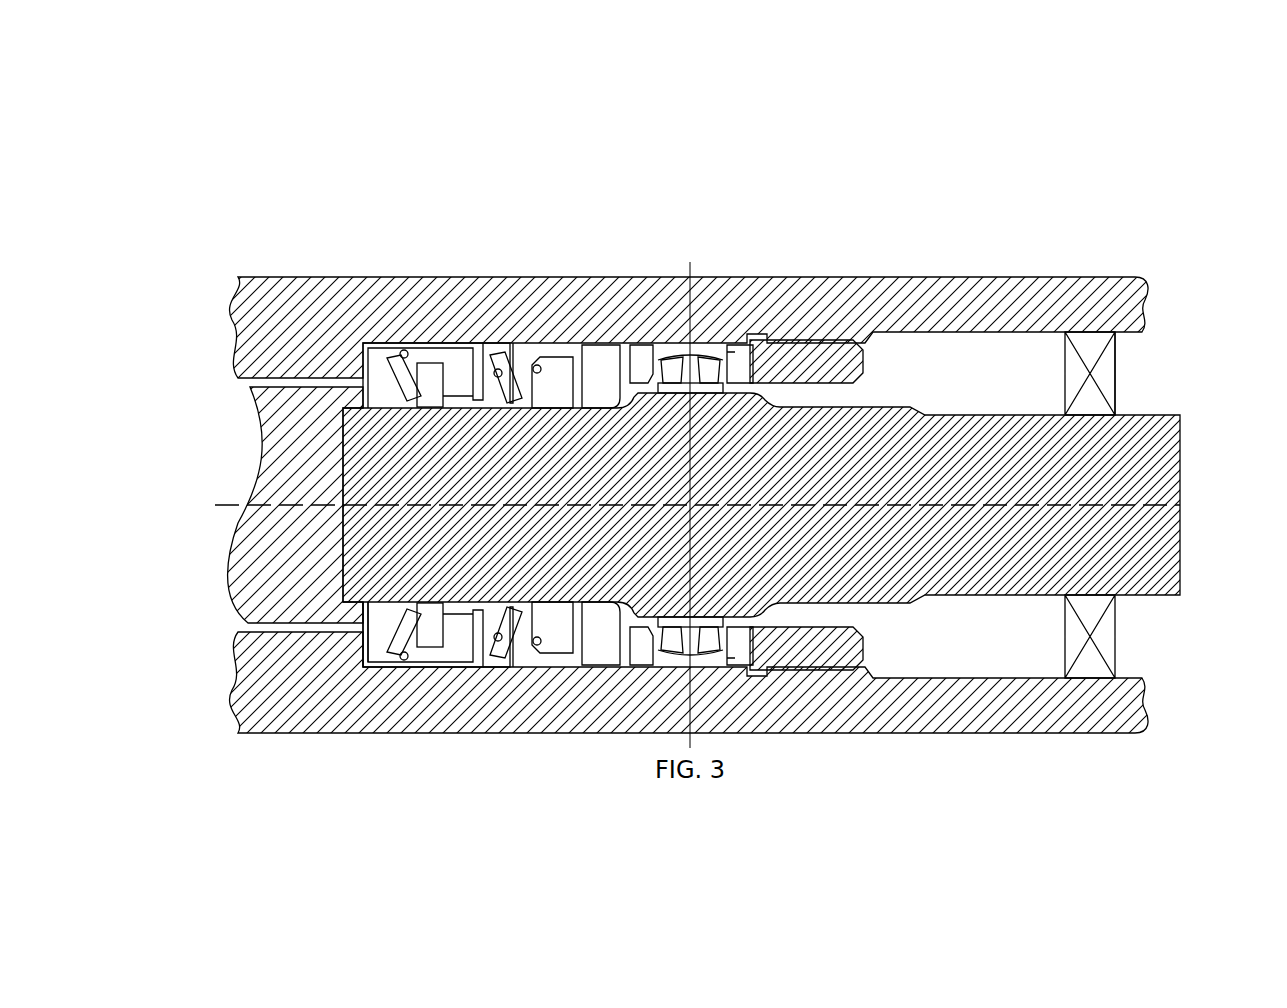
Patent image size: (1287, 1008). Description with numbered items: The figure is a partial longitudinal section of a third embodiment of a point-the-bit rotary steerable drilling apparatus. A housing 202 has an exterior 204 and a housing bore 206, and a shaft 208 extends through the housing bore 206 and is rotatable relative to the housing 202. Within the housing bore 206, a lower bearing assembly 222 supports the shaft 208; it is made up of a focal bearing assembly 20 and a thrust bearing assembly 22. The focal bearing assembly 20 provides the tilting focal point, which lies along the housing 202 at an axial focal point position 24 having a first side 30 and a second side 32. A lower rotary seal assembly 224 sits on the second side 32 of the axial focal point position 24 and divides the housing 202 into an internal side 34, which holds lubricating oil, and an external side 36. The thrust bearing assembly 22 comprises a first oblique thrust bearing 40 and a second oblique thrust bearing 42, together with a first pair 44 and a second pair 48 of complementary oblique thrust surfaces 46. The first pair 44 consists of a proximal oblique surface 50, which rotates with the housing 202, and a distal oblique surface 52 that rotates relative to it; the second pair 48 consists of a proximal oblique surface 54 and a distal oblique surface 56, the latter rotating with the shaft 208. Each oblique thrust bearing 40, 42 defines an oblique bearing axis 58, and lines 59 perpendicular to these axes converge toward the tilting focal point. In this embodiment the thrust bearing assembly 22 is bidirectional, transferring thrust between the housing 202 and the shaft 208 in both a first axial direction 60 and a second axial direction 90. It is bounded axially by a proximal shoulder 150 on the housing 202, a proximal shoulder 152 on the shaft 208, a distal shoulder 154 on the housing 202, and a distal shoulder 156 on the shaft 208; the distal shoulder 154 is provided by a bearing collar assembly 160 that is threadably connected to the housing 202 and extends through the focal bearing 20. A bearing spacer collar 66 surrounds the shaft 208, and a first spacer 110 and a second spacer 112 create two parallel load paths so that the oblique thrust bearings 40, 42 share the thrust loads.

The focal bearing assembly 20 is at (710, 345).
The thrust bearing assembly 22 is at (467, 297).
The axial focal point position 24 is at (690, 700).
The first side 30 is at (263, 627).
The second side 32 is at (985, 657).
The internal side 34 is at (310, 627).
The external side 36 is at (1120, 367).
The first oblique thrust bearing 40 is at (407, 643).
The second oblique thrust bearing 42 is at (513, 648).
The first pair of complementary oblique thrust surfaces 44 is at (428, 505).
The complementary oblique thrust surfaces 46 is at (408, 348).
The second pair of complementary oblique thrust surfaces 48 is at (507, 352).
The proximal oblique surface 50 is at (410, 388).
The distal oblique surface 52 is at (395, 585).
The proximal oblique surface 54 is at (430, 690).
The distal oblique surface 56 is at (540, 620).
The oblique bearing axis 58 is at (445, 380).
The lines 59 is at (575, 357).
The first axial direction 60 is at (185, 328).
The bearing spacer collar 66 is at (598, 362).
The second axial direction 90 is at (1190, 707).
The first spacer 110 is at (430, 362).
The second spacer 112 is at (487, 345).
The proximal shoulder on the housing 150 is at (363, 370).
The proximal shoulder on the shaft 152 is at (357, 610).
The distal shoulder on the housing 154 is at (643, 372).
The distal shoulder on the shaft 156 is at (615, 355).
The bearing collar assembly 160 is at (805, 370).
The housing 202 is at (953, 282).
The exterior 204 is at (815, 735).
The housing bore 206 is at (918, 657).
The shaft 208 is at (1160, 465).
The lower bearing assembly 222 is at (573, 163).
The lower rotary seal assembly 224 is at (1092, 350).